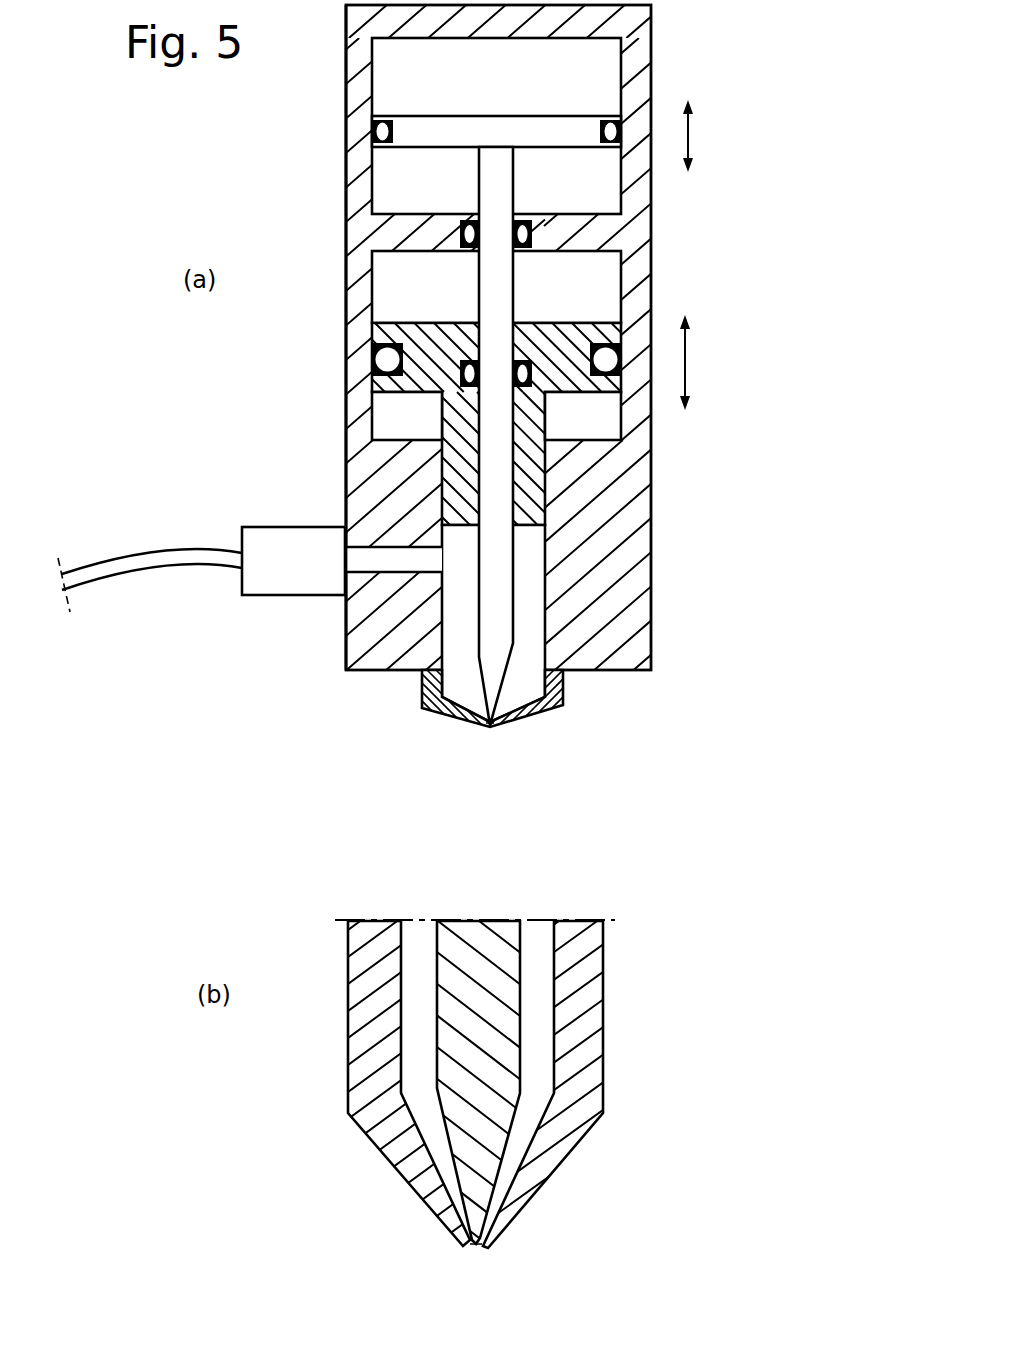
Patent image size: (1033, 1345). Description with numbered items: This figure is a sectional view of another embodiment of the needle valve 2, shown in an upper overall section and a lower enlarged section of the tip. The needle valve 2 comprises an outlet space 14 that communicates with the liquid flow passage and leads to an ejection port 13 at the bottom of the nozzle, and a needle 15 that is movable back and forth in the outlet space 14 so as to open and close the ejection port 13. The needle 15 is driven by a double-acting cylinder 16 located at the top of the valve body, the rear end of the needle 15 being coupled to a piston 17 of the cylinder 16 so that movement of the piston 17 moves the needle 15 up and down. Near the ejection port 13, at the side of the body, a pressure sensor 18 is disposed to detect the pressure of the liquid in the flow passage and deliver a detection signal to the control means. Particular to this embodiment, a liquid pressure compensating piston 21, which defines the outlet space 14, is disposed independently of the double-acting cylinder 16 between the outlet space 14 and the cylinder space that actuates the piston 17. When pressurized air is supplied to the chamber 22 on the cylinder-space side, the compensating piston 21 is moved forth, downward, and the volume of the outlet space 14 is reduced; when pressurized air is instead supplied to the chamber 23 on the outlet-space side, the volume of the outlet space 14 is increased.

The needle valve 2 is at (424, 657).
The ejection port 13 is at (488, 730).
The outlet space 14 is at (518, 623).
The needle 15 is at (490, 667).
The double-acting cylinder 16 is at (334, 97).
The piston 17 is at (575, 114).
The pressure sensor 18 is at (285, 548).
The liquid pressure compensating piston 21 is at (578, 323).
The chamber 22 is at (569, 294).
The chamber 23 is at (596, 424).